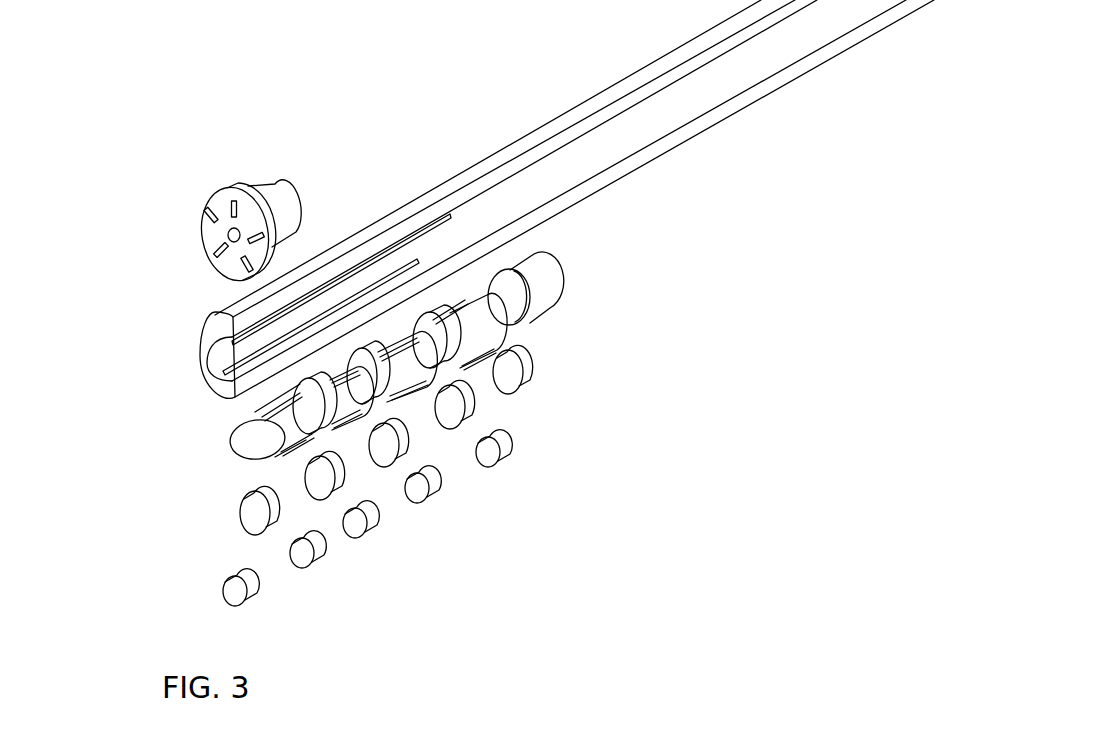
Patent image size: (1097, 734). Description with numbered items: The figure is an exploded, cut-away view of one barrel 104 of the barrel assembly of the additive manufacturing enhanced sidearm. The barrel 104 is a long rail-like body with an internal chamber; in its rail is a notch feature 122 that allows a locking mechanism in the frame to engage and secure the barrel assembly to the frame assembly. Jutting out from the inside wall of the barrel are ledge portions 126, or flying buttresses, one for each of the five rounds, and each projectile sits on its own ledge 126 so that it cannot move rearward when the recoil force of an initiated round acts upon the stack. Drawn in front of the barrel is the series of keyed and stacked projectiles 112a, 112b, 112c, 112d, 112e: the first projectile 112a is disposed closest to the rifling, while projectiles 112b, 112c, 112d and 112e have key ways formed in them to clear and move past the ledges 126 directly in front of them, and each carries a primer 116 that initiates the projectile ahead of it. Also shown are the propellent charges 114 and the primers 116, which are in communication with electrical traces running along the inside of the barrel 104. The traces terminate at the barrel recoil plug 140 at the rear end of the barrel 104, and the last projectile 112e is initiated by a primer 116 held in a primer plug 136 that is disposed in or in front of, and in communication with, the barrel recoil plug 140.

The barrel 104 is at (742, 112).
The projectile 112a is at (697, 238).
The projectile 112b is at (460, 331).
The projectile 112c is at (392, 367).
The projectile 112d is at (333, 400).
The projectile 112e is at (253, 460).
The propellent charge 114 is at (363, 455).
The primer 116 is at (495, 470).
The notch feature 122 is at (452, 312).
The ledge portion 126 is at (225, 342).
The primer plug 136 is at (283, 190).
The barrel recoil plug 140 is at (207, 187).